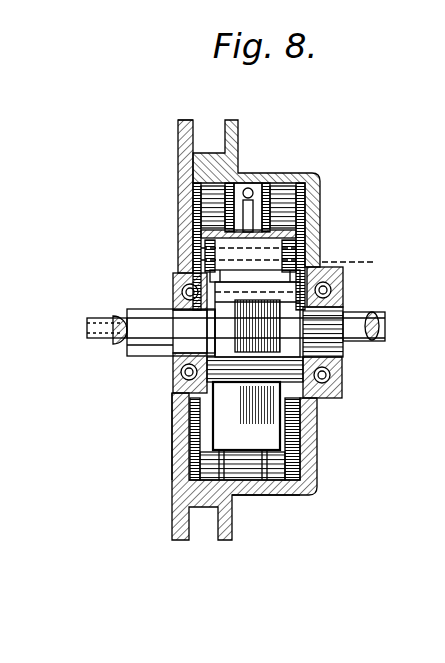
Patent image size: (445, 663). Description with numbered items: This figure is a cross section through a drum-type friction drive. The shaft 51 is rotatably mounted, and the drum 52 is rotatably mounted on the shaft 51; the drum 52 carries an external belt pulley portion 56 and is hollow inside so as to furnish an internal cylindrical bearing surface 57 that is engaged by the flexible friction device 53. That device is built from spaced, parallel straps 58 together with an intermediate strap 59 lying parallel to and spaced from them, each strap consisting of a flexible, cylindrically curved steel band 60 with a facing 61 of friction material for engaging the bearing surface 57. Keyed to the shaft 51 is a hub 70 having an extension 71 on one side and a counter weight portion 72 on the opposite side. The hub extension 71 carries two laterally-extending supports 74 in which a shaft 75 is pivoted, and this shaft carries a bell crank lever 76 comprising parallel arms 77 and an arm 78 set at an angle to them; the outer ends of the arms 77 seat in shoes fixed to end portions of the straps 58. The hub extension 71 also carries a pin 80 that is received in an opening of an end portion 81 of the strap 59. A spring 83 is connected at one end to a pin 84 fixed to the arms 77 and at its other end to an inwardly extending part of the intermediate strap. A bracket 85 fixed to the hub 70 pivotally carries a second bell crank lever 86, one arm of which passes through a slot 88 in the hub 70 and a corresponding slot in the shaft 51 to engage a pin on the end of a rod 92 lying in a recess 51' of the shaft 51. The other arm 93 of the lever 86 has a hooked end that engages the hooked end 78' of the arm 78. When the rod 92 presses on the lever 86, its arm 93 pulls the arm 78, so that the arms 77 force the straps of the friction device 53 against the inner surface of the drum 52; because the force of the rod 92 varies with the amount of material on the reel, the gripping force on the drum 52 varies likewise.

The shaft 51 is at (278, 326).
The recess 51' is at (97, 312).
The drum 52 is at (307, 496).
The flexible friction device 53 is at (249, 496).
The belt pulley portion 56 is at (208, 152).
The internal cylindrical bearing surface 57 is at (302, 172).
The spaced parallel straps 58 is at (205, 420).
The intermediate strap 59 is at (183, 477).
The steel bands 60 is at (300, 450).
The facings 61 is at (321, 183).
The hub 70 is at (178, 430).
The hub extension 71 is at (318, 217).
The counter weight portion 72 is at (303, 438).
The laterally-extending supports 74 is at (201, 241).
The shaft 75 is at (345, 263).
The bell crank lever 76 is at (210, 275).
The parallel arms 77 is at (190, 256).
The arm 78 is at (171, 317).
The hooked end 78' is at (171, 332).
The pin 80 is at (212, 203).
The end portion 81 is at (265, 183).
The spring 83 is at (205, 222).
The pin 84 is at (320, 230).
The bracket 85 is at (343, 315).
The bell crank lever 86 is at (165, 355).
The slot 88 is at (340, 360).
The rod 92 is at (112, 338).
The arm 93 is at (173, 366).